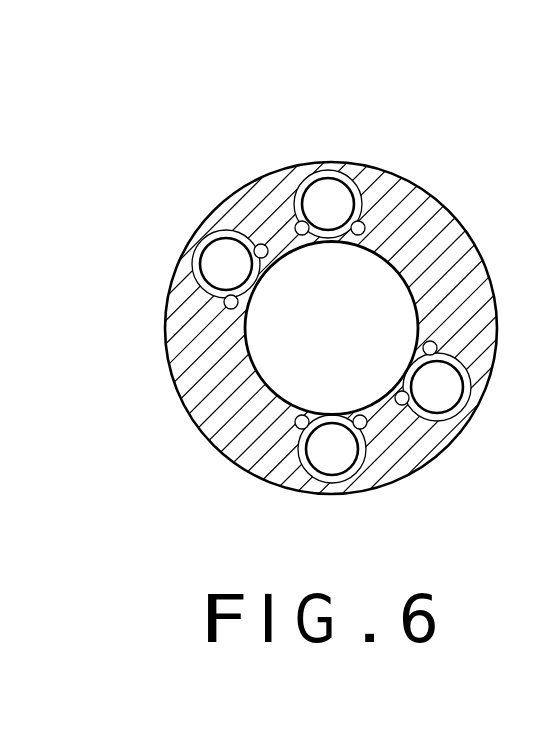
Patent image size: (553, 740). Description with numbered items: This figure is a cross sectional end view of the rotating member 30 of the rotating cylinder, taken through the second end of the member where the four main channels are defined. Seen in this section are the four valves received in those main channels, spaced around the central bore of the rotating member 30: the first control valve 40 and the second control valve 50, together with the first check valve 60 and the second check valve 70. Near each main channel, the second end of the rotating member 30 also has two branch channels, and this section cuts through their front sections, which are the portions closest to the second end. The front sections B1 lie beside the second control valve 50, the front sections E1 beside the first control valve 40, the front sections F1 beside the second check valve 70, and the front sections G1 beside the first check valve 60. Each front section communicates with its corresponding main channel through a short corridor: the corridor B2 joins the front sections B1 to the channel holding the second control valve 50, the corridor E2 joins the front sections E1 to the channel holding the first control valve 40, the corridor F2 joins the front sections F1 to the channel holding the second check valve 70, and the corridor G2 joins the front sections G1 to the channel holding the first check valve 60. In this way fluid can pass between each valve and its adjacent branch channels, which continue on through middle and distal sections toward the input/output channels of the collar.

The rotating member 30 is at (339, 106).
The first control valve 40 is at (338, 463).
The second control valve 50 is at (337, 190).
The first check valve 60 is at (215, 250).
The second check valve 70 is at (442, 400).
The front section B1 is at (358, 228).
The corridor B2 is at (358, 213).
The front section E1 is at (298, 425).
The corridor E2 is at (298, 452).
The front section F1 is at (432, 347).
The corridor F2 is at (418, 412).
The front section G1 is at (259, 246).
The corridor G2 is at (203, 291).